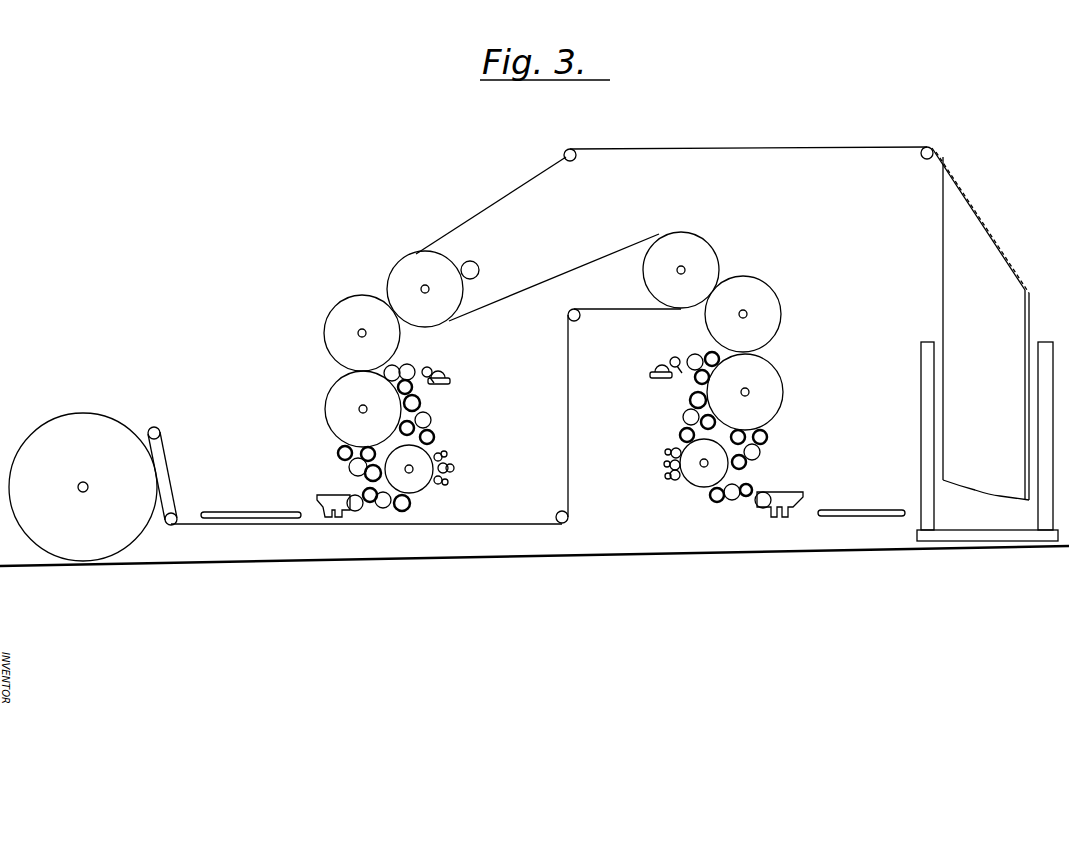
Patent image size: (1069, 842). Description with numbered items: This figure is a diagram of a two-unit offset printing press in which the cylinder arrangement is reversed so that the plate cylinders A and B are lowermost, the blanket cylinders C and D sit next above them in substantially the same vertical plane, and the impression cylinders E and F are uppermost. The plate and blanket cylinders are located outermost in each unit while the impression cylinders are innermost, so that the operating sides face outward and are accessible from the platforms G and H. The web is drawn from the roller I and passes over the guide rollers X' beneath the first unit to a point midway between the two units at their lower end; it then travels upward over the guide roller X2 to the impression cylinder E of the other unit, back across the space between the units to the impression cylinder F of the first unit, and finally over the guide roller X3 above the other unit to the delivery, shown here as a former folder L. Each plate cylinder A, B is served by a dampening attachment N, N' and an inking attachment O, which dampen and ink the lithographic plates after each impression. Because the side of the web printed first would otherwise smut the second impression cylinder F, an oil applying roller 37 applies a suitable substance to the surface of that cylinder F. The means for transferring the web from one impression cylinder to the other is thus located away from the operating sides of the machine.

The roller I is at (91, 414).
The guide rollers X' is at (374, 467).
The platform G is at (260, 511).
The blanket cylinder D is at (334, 310).
The impression cylinder F is at (396, 263).
The oil applying roller 37 is at (477, 264).
The plate cylinder B is at (327, 402).
The inking attachment O is at (560, 434).
The dampening attachment N' is at (452, 374).
The dampening attachment N is at (648, 371).
The impression cylinder E is at (692, 233).
The blanket cylinder C is at (768, 290).
The plate cylinder A is at (778, 367).
The guide roller X2 is at (568, 316).
The guide roller X3 is at (574, 161).
The former folder L is at (980, 324).
The platform H is at (864, 509).